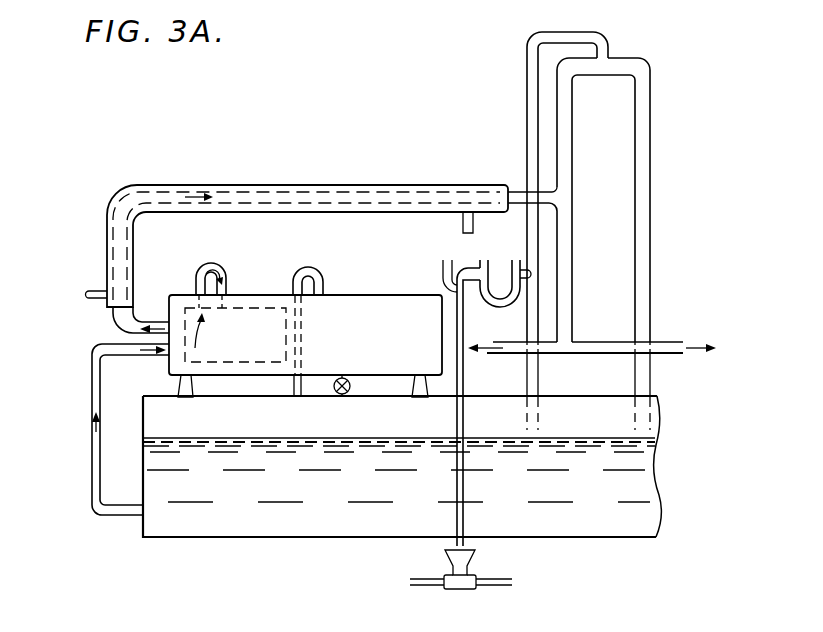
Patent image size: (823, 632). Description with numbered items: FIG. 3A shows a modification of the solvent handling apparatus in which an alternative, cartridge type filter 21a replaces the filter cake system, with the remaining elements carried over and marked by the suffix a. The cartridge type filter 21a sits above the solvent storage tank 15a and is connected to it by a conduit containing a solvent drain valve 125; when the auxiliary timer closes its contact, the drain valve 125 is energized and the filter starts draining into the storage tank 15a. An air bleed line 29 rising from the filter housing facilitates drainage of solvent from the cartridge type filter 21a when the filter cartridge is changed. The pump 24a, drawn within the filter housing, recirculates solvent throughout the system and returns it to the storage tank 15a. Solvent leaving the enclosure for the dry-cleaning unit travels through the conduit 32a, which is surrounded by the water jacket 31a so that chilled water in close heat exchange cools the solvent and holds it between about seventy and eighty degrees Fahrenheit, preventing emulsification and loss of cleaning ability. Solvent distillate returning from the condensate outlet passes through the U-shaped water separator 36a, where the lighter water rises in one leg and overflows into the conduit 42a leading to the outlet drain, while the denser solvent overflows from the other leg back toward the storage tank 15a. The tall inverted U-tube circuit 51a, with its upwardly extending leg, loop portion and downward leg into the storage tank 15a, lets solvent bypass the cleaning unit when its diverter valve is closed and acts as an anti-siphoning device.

The storage tank 15a is at (280, 537).
The cartridge type filter 21a is at (353, 295).
The pump 24a is at (245, 306).
The air bleed line 29 is at (330, 270).
The water jacket 31a is at (256, 184).
The conduit 32a is at (116, 325).
The water separator 36a is at (502, 256).
The conduit 42a is at (463, 487).
The inverted U-tube circuit 51a is at (664, 128).
The solvent drain valve 125 is at (347, 393).